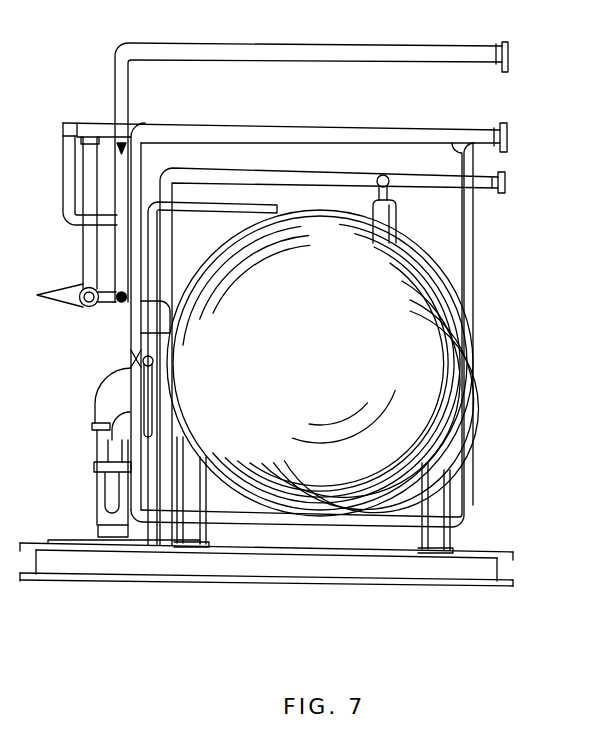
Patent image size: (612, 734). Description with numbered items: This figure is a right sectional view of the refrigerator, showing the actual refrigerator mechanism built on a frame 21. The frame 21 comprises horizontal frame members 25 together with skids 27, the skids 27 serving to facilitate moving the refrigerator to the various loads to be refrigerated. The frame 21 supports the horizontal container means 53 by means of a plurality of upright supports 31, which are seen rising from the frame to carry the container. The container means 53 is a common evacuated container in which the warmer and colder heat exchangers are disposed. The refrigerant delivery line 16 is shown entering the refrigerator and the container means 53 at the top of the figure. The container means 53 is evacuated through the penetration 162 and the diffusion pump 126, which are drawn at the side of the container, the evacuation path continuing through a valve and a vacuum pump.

The refrigerant delivery line 16 is at (340, 46).
The frame 21 is at (228, 585).
The horizontal frame members 25 is at (392, 582).
The skids 27 is at (523, 569).
The upright supports 31 is at (188, 486).
The container means 53 is at (426, 319).
The diffusion pump 126 is at (96, 495).
The penetration 162 is at (115, 383).